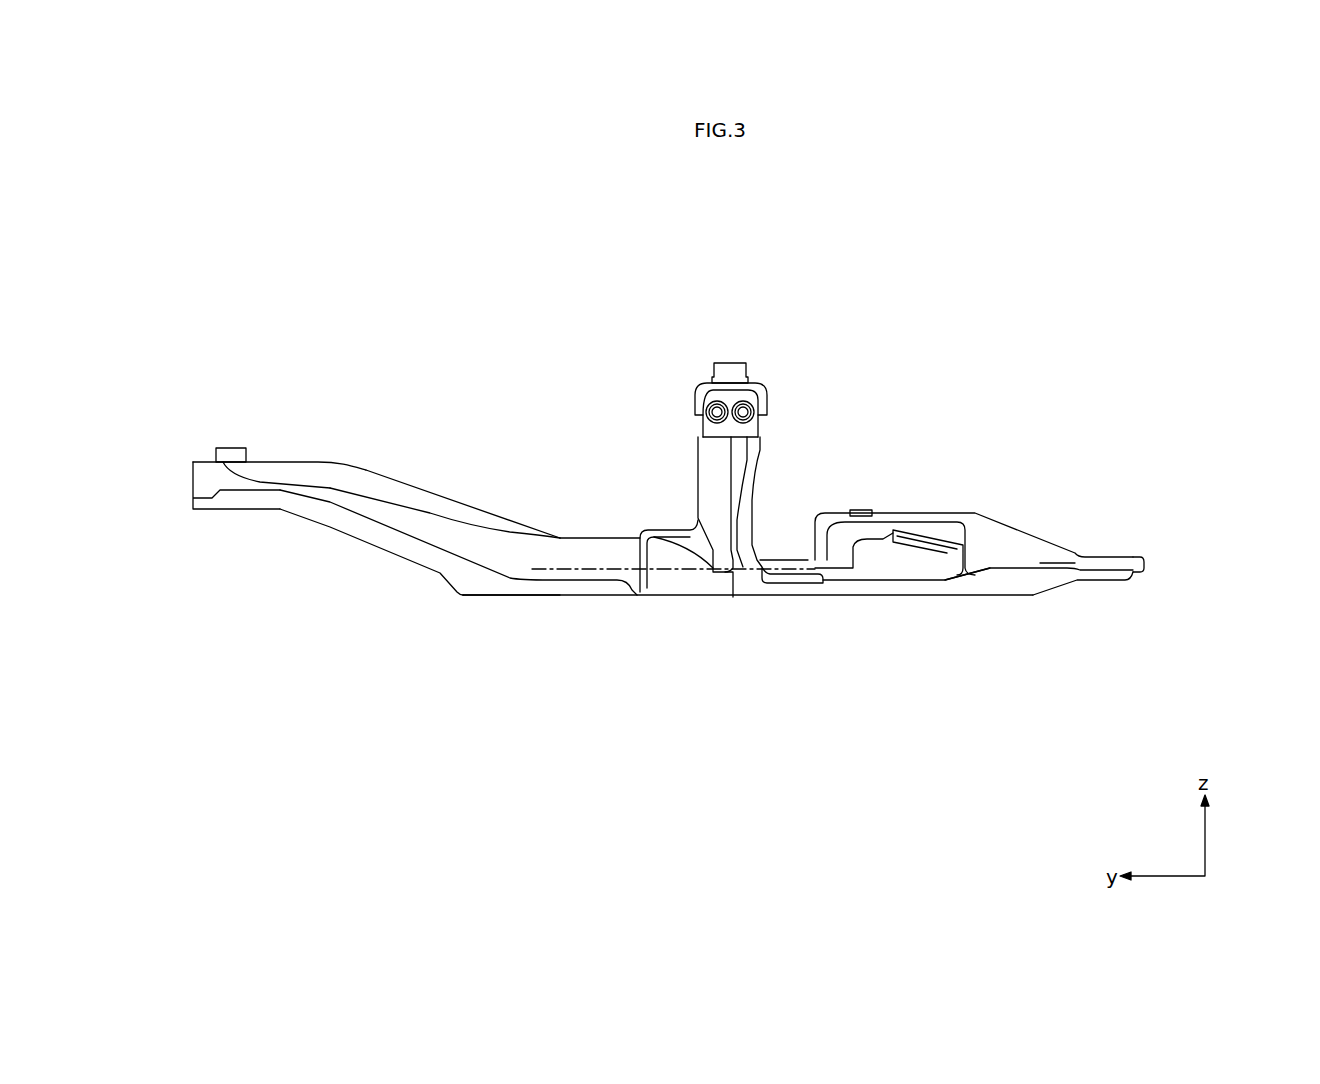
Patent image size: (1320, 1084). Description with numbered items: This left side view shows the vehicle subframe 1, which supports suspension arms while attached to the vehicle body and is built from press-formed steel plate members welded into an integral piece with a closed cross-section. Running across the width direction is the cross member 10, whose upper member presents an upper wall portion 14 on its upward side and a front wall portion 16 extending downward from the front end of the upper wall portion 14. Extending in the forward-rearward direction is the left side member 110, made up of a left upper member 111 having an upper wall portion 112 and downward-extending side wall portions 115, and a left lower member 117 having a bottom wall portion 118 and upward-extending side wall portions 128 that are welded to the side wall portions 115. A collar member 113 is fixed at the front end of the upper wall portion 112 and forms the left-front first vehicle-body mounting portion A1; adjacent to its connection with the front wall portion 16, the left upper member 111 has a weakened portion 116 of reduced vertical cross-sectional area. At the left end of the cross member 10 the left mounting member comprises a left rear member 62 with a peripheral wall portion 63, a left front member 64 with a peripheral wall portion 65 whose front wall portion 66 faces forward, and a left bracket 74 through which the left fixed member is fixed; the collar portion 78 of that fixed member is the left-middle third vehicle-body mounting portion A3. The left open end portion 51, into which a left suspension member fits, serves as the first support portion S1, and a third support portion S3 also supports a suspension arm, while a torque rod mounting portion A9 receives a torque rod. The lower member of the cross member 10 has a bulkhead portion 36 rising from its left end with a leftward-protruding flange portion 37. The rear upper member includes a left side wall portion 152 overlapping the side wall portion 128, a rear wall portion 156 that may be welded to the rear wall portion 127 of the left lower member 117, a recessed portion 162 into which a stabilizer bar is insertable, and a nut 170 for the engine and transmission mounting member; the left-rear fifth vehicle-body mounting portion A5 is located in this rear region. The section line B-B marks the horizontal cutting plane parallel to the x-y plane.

The subframe 1 is at (892, 311).
The first vehicle-body mounting portion A1 is at (211, 428).
The collar member 113 is at (232, 447).
The upper wall portion 112 is at (327, 458).
The left side member 110 is at (362, 427).
The left upper member 111 is at (398, 452).
The side wall portion 115 is at (442, 507).
The weakened portion 116 is at (565, 528).
The left lower member 117 is at (334, 551).
The bottom wall portion 118 is at (473, 595).
The B-B section line B is at (803, 565).
The upper wall portion 14 is at (664, 520).
The front wall portion 16 is at (652, 582).
The front wall portion 66 is at (703, 563).
The cross member 10 is at (672, 483).
The peripheral wall portion 65 is at (705, 450).
The left front member 64 is at (687, 449).
The left bracket 74 is at (767, 403).
The collar member 78 is at (730, 367).
The third vehicle-body mounting portion A3 is at (706, 338).
The peripheral wall portion 63 is at (765, 467).
The left rear member 62 is at (775, 484).
The torque rod mounting portion A9 is at (863, 489).
The nut 170 is at (862, 510).
The recessed portion 162 is at (788, 521).
The flange portion 37 is at (928, 533).
The bulkhead portion 36 is at (947, 545).
The fifth vehicle-body mounting portion A5 is at (1067, 516).
The left side wall portion 152 is at (1070, 558).
The rear wall portion 156 is at (1140, 558).
The rear wall portion 127 is at (1137, 577).
The side wall portion 128 is at (977, 580).
The third support portion S3 is at (901, 623).
The first support portion S1 is at (675, 617).
The left open end portion 51 is at (703, 611).